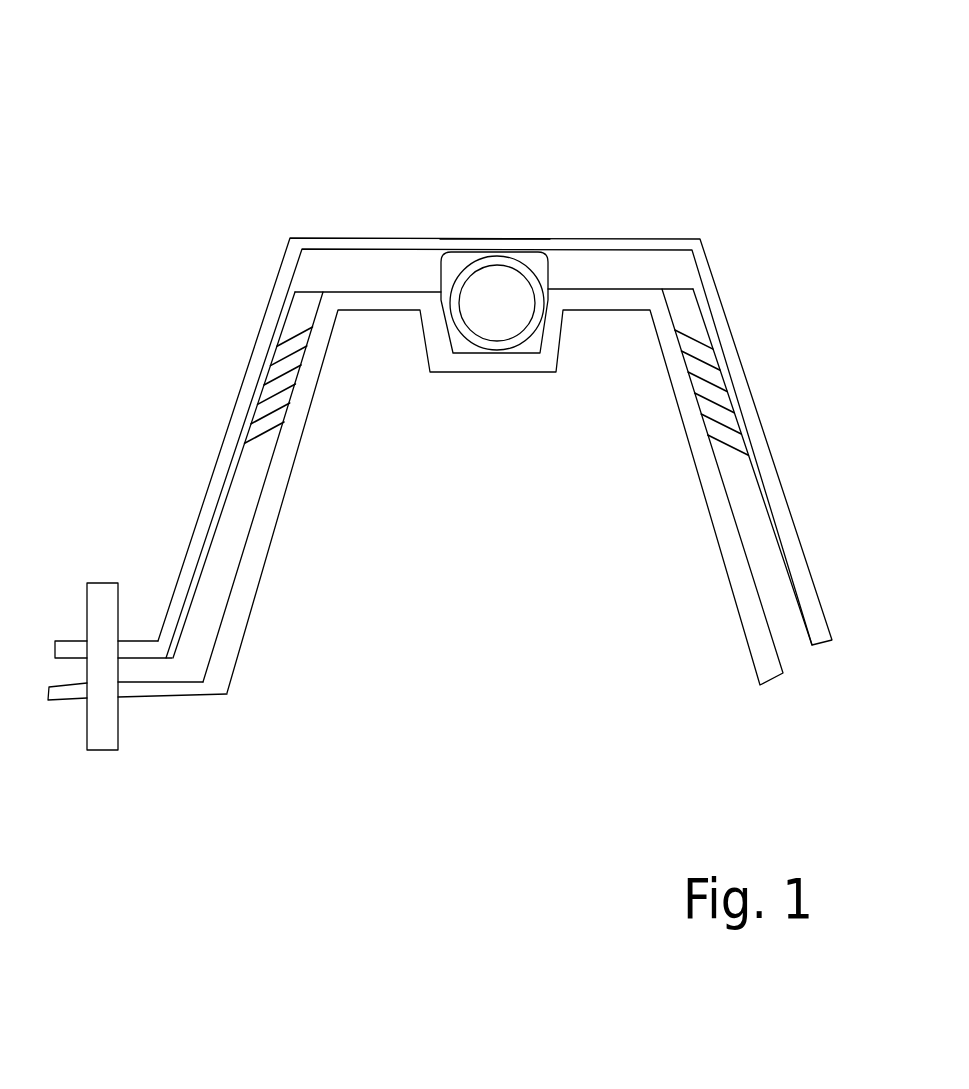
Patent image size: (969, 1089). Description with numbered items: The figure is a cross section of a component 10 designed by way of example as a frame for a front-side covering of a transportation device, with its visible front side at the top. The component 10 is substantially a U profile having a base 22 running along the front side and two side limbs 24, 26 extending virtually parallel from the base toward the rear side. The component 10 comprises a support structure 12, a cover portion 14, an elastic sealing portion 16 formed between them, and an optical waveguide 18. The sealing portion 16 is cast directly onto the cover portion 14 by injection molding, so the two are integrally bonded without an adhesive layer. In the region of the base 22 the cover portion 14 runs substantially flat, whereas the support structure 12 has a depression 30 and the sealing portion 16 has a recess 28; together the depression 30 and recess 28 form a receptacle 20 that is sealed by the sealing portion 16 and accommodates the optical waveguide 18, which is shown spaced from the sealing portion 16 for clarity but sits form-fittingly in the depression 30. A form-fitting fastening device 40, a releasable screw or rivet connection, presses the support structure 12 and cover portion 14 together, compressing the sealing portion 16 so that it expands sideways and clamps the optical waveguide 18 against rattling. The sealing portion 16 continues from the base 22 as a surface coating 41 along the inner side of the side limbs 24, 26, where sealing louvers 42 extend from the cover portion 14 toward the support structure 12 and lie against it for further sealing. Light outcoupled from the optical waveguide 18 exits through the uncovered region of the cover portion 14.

The component 10 is at (648, 117).
The support structure 12 is at (722, 522).
The cover portion 14 is at (605, 241).
The elastic sealing portion 16 is at (376, 266).
The optical waveguide 18 is at (477, 303).
The receptacle 20 is at (537, 252).
The base 22 is at (492, 184).
The side limb 24 is at (247, 283).
The side limb 26 is at (775, 292).
The recess 28 is at (437, 273).
The depression 30 is at (484, 363).
The form-fitting fastening device 40 is at (105, 738).
The surface coating 41 is at (232, 489).
The sealing louvers 42 is at (280, 397).